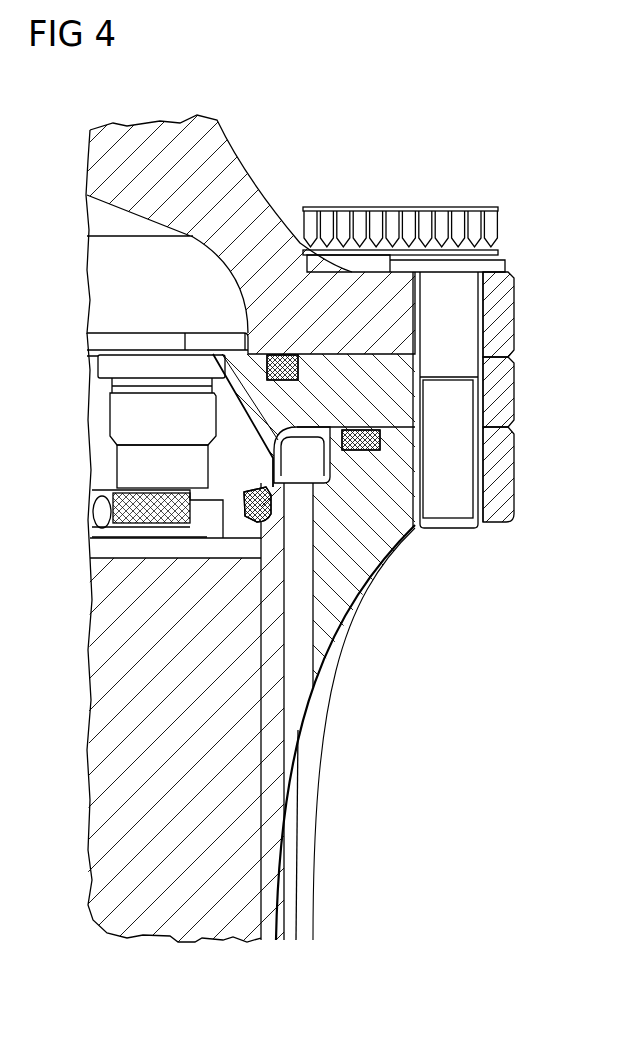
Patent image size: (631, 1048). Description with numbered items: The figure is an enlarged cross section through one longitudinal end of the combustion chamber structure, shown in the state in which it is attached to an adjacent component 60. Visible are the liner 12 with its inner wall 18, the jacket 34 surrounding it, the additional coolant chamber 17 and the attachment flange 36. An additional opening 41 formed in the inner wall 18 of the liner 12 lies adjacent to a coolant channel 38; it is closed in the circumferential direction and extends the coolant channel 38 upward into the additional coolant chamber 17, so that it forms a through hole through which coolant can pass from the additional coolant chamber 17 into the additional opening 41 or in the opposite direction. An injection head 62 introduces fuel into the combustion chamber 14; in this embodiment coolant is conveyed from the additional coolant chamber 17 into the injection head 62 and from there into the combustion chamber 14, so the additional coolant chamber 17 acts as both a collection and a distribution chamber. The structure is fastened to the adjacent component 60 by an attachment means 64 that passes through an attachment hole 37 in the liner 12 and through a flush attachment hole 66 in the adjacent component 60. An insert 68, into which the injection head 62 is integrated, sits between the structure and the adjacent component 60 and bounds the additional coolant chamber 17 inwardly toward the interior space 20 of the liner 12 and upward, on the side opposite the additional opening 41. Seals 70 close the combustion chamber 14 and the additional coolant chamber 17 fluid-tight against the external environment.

The liner 12 is at (353, 580).
The combustion chamber 14 is at (105, 752).
The additional coolant chamber 17 is at (218, 450).
The inner wall 18 is at (291, 870).
The interior space 20 is at (98, 662).
The jacket 34 is at (303, 915).
The attachment flange 36 is at (422, 466).
The attachment hole 37 is at (462, 486).
The coolant channel 38 is at (286, 828).
The additional opening 41 is at (303, 620).
The adjacent component 60 is at (231, 162).
The injection head 62 is at (127, 465).
The attachment means 64 is at (463, 337).
The attachment hole 66 is at (514, 297).
The insert 68 is at (500, 396).
The seal 70 is at (268, 364).